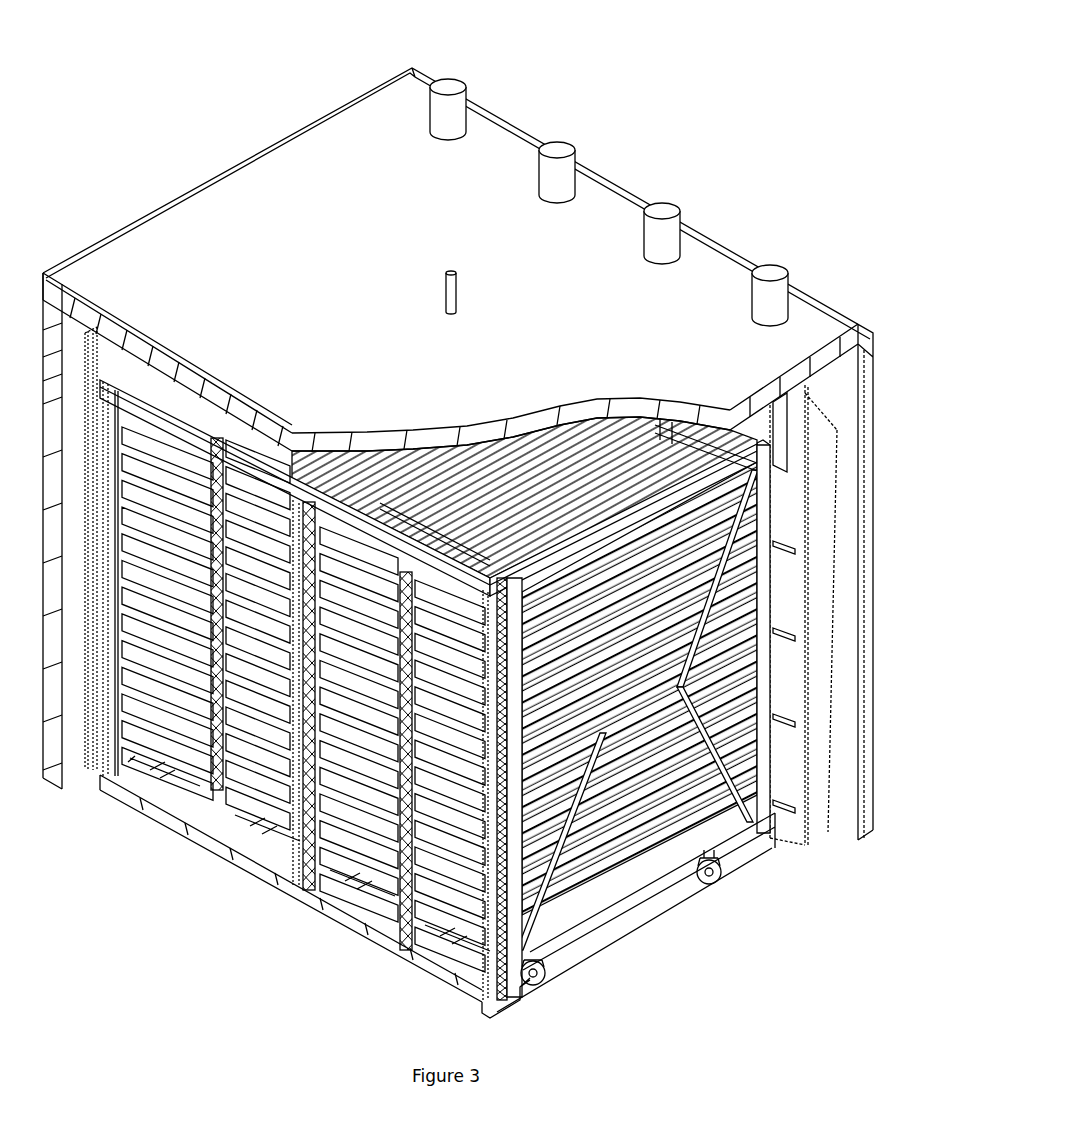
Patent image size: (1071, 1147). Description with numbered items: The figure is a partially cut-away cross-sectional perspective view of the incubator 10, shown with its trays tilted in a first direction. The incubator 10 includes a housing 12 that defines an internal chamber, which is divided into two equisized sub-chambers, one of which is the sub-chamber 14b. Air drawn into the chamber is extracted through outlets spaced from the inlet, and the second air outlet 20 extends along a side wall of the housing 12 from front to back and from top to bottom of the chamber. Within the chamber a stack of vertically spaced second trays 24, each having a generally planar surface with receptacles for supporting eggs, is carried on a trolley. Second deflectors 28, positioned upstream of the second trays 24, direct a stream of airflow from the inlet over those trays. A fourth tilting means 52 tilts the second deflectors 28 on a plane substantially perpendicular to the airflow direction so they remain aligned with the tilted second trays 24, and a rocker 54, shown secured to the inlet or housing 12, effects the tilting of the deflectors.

The incubator 10 is at (743, 95).
The housing 12 is at (156, 231).
The sub-chamber 14b is at (818, 390).
The second air outlet 20 is at (455, 80).
The second trays 24 is at (351, 431).
The second deflectors 28 is at (157, 751).
The fourth tilting means 52 is at (501, 431).
The rocker 54 is at (274, 426).